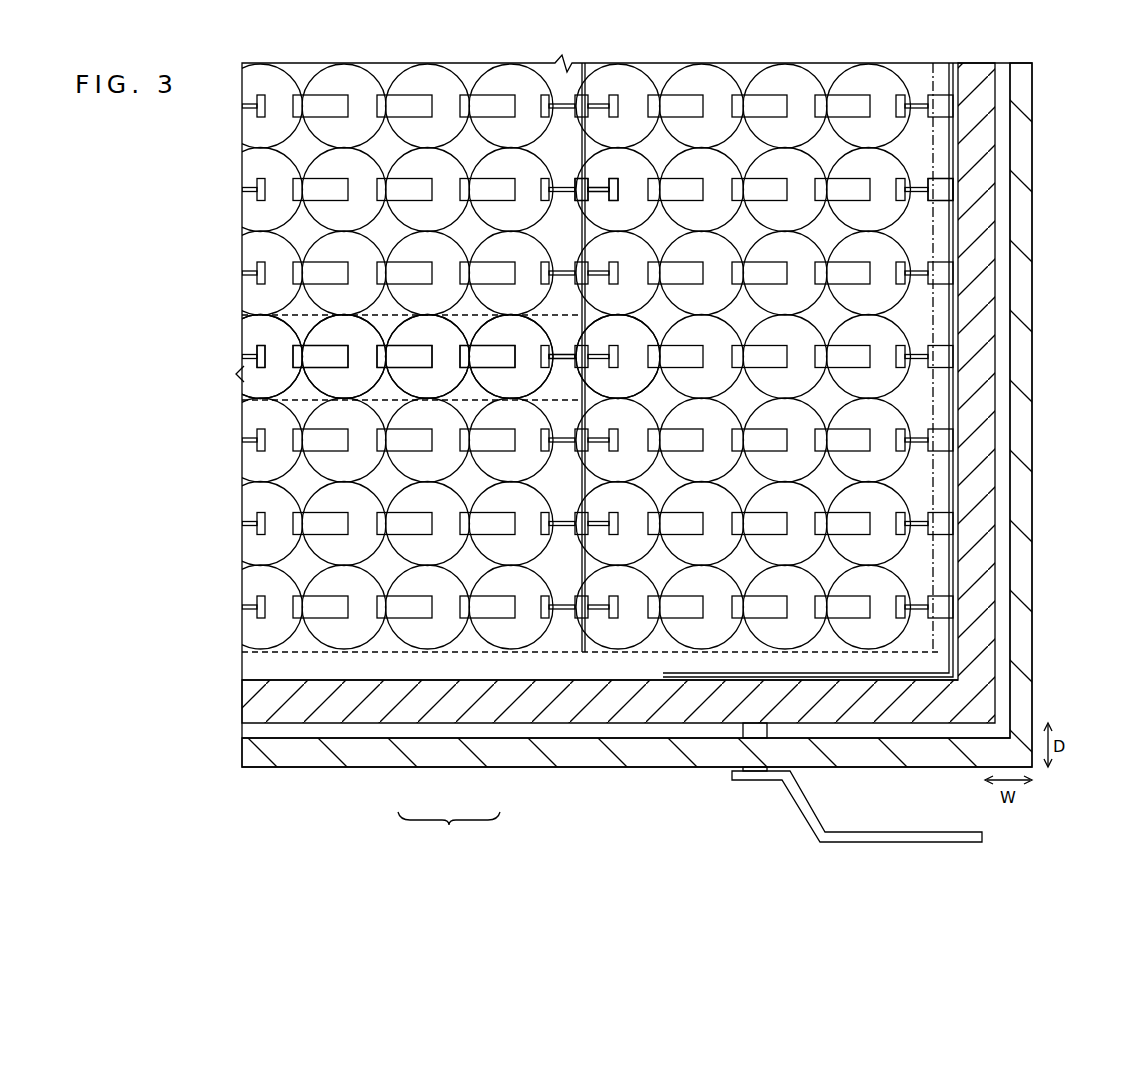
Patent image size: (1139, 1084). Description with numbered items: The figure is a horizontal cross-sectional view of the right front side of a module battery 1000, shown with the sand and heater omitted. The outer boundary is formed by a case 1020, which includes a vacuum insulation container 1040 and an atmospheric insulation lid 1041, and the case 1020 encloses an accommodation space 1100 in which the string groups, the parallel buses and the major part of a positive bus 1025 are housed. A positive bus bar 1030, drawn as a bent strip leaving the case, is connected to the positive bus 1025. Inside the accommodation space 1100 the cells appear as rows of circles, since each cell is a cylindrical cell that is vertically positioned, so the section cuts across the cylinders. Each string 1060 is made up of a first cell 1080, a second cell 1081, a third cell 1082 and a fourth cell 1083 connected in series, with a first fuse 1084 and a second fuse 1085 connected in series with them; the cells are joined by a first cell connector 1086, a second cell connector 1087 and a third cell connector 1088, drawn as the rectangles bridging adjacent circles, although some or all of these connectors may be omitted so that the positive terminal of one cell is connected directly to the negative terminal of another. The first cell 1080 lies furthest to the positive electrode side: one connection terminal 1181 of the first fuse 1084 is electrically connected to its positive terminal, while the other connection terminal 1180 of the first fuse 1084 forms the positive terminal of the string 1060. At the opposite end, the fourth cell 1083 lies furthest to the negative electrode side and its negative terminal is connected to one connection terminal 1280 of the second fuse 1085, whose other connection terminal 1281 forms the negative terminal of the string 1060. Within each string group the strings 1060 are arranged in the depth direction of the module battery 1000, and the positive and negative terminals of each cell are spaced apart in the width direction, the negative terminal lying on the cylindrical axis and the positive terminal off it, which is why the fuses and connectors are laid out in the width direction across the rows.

The module battery 1000 is at (1045, 76).
The case 1020 is at (449, 829).
The positive bus 1025 is at (933, 577).
The positive bus bar 1030 is at (908, 832).
The vacuum insulation container 1040 is at (483, 723).
The atmospheric insulation lid 1041 is at (418, 767).
The string 1060 is at (578, 310).
The first cell 1080 is at (549, 315).
The second cell 1081 is at (466, 315).
The third cell 1082 is at (382, 315).
The fourth cell 1083 is at (298, 315).
The first fuse 1084 is at (563, 364).
The second fuse 1085 is at (247, 364).
The first cell connector 1086 is at (484, 369).
The second cell connector 1087 is at (400, 369).
The third cell connector 1088 is at (316, 369).
The accommodation space 1100 is at (560, 665).
The other connection terminal of first fuse 1180 is at (874, 370).
The connection terminal of first fuse 1181 is at (936, 228).
The connection terminal of second fuse 1280 is at (599, 197).
The other connection terminal of second fuse 1281 is at (583, 174).